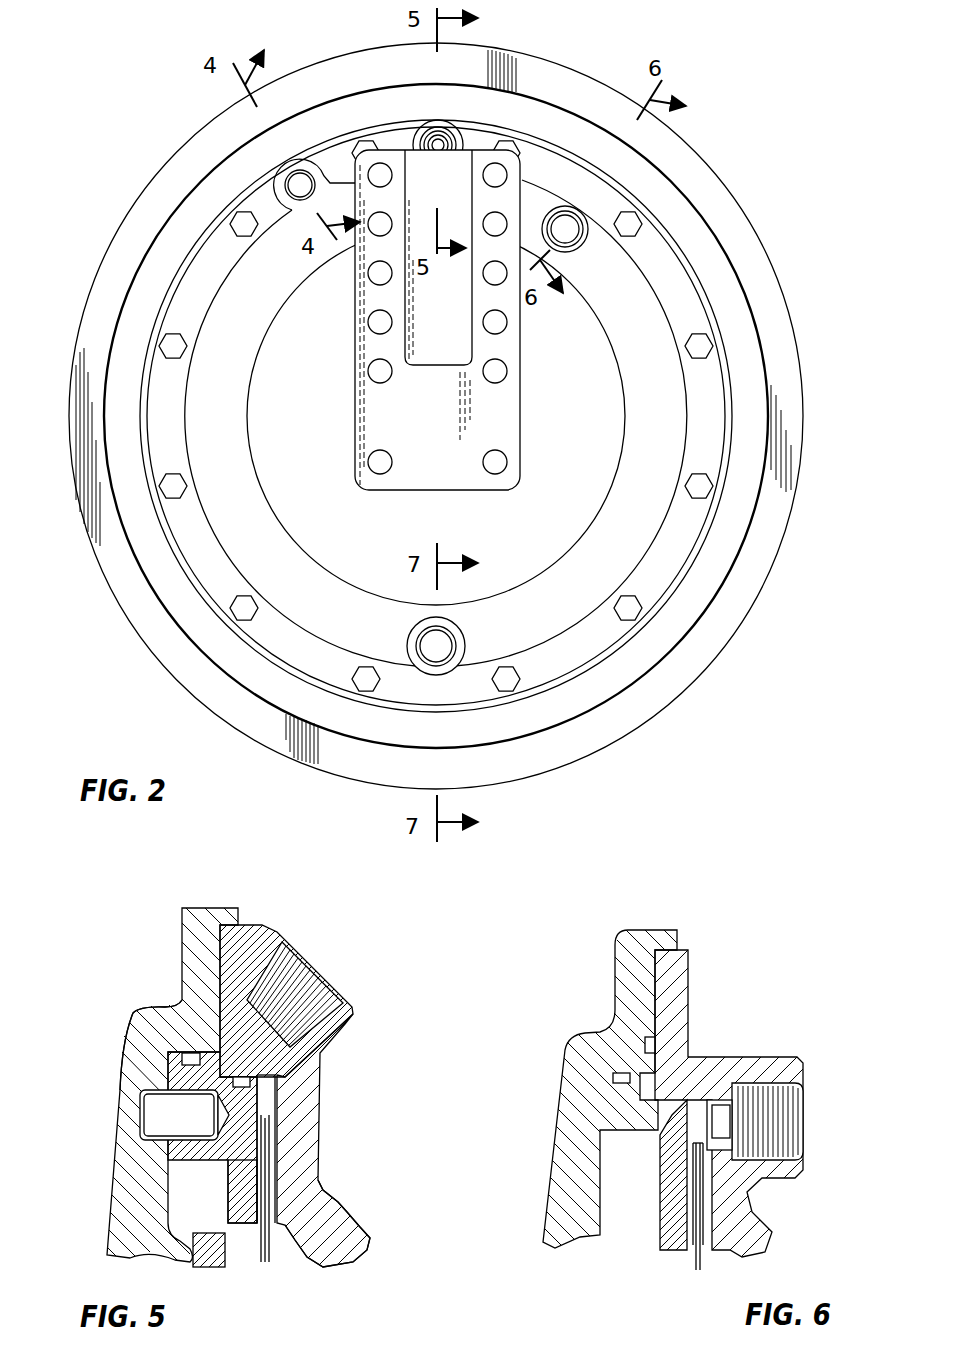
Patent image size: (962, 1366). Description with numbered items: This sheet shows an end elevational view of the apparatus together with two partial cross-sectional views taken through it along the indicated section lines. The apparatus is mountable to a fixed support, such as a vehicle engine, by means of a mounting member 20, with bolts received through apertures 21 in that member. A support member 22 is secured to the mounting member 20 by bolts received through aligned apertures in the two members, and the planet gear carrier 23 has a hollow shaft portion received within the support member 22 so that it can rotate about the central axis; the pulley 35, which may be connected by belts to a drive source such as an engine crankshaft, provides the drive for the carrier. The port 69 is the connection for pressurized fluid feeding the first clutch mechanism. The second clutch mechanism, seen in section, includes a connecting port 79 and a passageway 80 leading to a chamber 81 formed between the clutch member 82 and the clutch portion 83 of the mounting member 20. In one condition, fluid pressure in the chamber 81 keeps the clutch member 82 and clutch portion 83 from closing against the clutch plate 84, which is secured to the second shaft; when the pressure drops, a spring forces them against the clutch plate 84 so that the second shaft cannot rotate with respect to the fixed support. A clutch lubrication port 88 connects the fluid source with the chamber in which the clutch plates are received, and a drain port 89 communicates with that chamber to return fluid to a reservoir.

In FIG. 2, the mounting member 20 is at (505, 419).
In FIG. 5, the mounting member 20 is at (328, 1227).
In FIG. 6, the mounting member 20 is at (680, 977).
In FIG. 2, the apertures 21 is at (498, 465).
In FIG. 2, the support member 22 is at (673, 598).
In FIG. 5, the support member 22 is at (128, 1195).
In FIG. 6, the support member 22 is at (597, 1057).
In FIG. 2, the planet gear carrier 23 is at (701, 350).
In FIG. 2, the pulley 35 is at (748, 568).
In FIG. 2, the port 69 is at (302, 186).
In FIG. 2, the connecting port 79 is at (442, 142).
In FIG. 5, the connecting port 79 is at (303, 977).
In FIG. 5, the passageway 80 is at (243, 1048).
In FIG. 5, the chamber 81 is at (170, 1005).
In FIG. 5, the clutch member 82 is at (240, 1187).
In FIG. 6, the clutch member 82 is at (670, 1187).
In FIG. 5, the clutch portion 83 is at (300, 1153).
In FIG. 5, the clutch plate 84 is at (277, 1253).
In FIG. 6, the clutch plate 84 is at (693, 1257).
In FIG. 2, the clutch lubrication port 88 is at (568, 232).
In FIG. 6, the clutch lubrication port 88 is at (797, 1117).
In FIG. 2, the drain port 89 is at (440, 646).